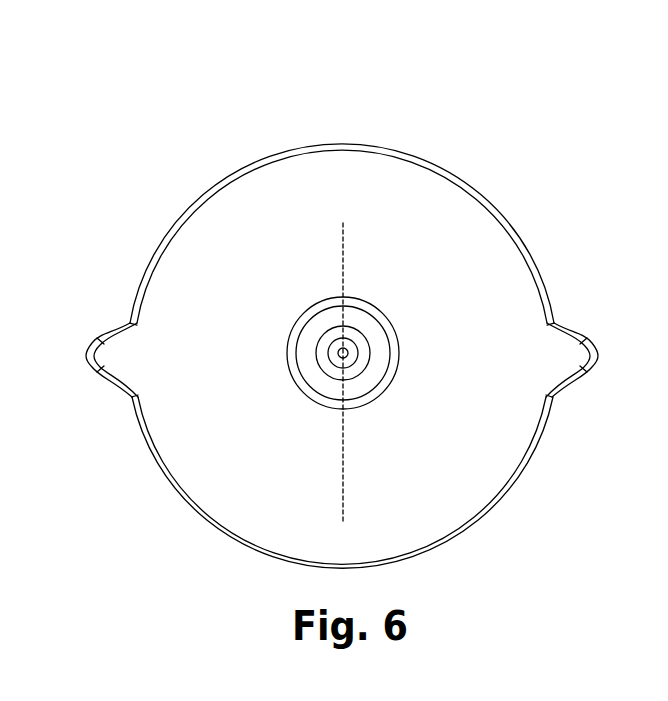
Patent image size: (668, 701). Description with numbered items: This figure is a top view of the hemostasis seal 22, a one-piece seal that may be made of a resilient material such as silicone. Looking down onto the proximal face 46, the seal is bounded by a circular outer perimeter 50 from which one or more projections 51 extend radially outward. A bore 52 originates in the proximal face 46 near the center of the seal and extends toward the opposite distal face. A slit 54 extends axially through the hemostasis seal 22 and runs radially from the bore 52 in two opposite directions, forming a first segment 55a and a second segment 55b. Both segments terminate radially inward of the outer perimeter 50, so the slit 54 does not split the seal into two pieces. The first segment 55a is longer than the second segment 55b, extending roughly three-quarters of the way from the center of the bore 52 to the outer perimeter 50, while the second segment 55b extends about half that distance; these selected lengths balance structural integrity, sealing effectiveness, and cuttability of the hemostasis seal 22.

The hemostasis seal 22 is at (345, 310).
The outer perimeter 50 is at (202, 157).
The second segment 55b is at (333, 268).
The proximal face 46 is at (182, 297).
The slit 54 is at (357, 262).
The bore 52 is at (375, 340).
The projections 51 is at (588, 315).
The first segment 55a is at (365, 470).